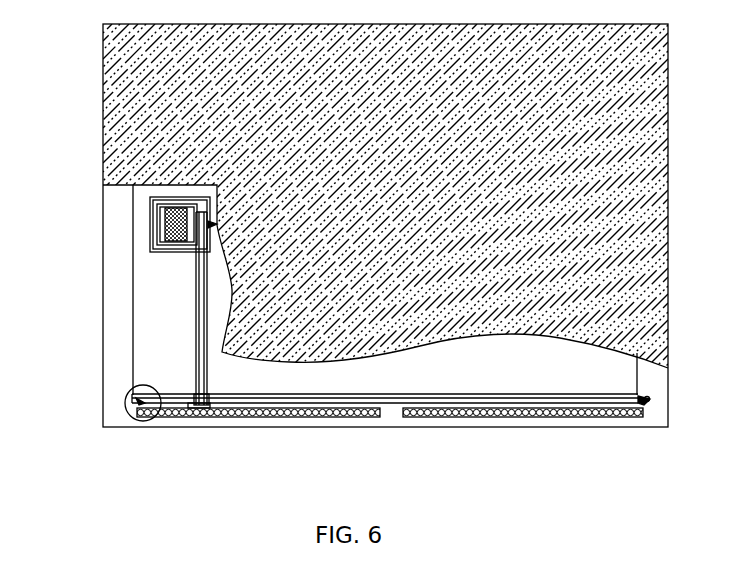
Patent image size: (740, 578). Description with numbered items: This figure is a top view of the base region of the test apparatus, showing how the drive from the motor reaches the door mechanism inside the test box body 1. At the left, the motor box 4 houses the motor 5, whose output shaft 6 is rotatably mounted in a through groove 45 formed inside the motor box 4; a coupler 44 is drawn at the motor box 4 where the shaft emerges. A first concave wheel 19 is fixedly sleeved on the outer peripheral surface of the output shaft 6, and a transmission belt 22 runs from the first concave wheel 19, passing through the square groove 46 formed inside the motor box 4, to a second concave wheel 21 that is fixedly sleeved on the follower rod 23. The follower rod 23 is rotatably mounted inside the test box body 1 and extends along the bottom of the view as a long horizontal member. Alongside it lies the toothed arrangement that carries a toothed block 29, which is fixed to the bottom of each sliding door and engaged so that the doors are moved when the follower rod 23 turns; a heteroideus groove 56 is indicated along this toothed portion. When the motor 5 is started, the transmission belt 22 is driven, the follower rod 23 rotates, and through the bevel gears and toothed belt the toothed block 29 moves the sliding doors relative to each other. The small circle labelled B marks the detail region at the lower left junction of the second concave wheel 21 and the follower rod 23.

The test box body 1 is at (102, 348).
The motor box 4 is at (148, 252).
The motor 5 is at (162, 228).
The output shaft 6 is at (193, 272).
The first concave wheel 19 is at (180, 203).
The second concave wheel 21 is at (196, 410).
The transmission belt 22 is at (198, 398).
The follower rod 23 is at (243, 398).
The toothed block 29 is at (348, 414).
The coupler 44 is at (213, 196).
The through groove 45 is at (215, 222).
The square groove 46 is at (197, 248).
The heteroideus groove 56 is at (260, 416).
The detail B is at (127, 412).